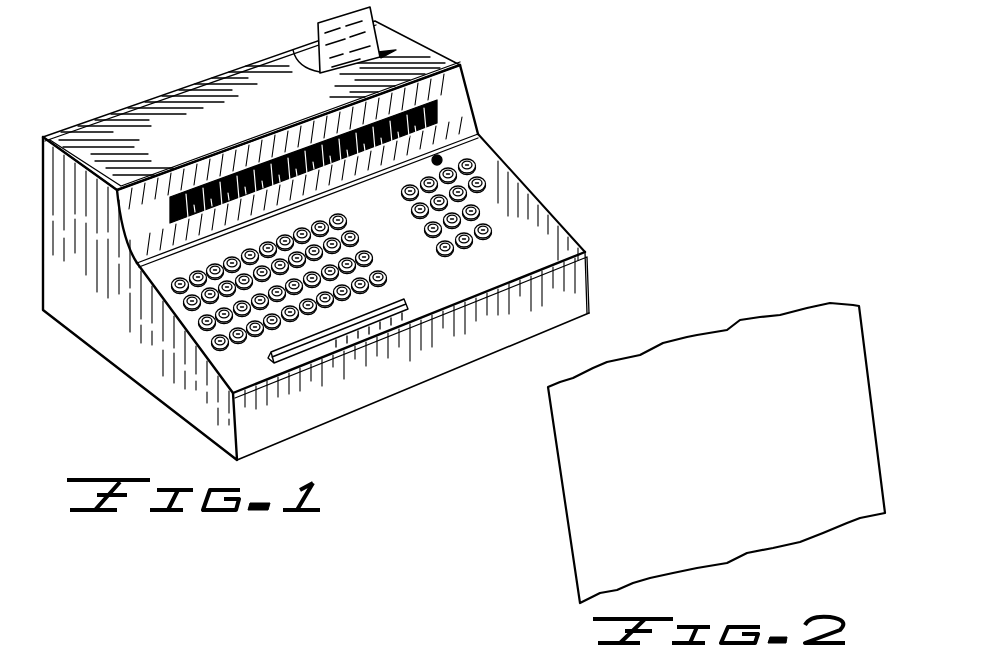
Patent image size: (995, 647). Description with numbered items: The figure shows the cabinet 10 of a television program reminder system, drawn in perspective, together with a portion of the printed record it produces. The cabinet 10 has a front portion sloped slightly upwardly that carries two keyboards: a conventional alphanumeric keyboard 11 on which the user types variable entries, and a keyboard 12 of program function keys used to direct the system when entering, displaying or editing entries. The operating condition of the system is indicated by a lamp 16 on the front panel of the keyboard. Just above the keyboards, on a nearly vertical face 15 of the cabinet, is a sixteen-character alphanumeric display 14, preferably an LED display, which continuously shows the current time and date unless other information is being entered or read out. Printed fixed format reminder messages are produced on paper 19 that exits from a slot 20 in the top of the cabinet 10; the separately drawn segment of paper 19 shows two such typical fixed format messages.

In FIG. 1, the cabinet 10 is at (522, 144).
In FIG. 1, the alphanumeric keyboard 11 is at (195, 321).
In FIG. 1, the program function keyboard 12 is at (504, 206).
In FIG. 1, the alphanumeric display 14 is at (440, 107).
In FIG. 1, the nearly vertical face 15 is at (138, 260).
In FIG. 1, the lamp 16 is at (442, 158).
In FIG. 1, the paper 19 is at (373, 21).
In FIG. 2, the paper 19 is at (868, 362).
In FIG. 1, the slot 20 is at (305, 52).